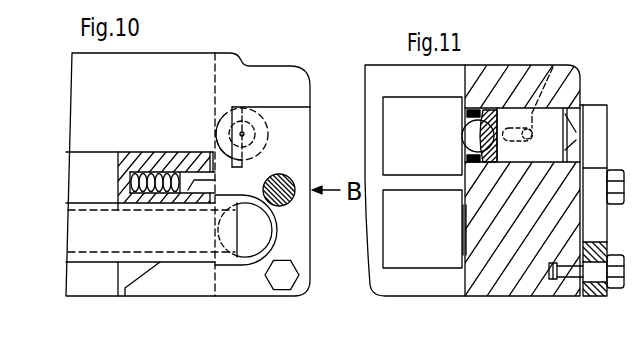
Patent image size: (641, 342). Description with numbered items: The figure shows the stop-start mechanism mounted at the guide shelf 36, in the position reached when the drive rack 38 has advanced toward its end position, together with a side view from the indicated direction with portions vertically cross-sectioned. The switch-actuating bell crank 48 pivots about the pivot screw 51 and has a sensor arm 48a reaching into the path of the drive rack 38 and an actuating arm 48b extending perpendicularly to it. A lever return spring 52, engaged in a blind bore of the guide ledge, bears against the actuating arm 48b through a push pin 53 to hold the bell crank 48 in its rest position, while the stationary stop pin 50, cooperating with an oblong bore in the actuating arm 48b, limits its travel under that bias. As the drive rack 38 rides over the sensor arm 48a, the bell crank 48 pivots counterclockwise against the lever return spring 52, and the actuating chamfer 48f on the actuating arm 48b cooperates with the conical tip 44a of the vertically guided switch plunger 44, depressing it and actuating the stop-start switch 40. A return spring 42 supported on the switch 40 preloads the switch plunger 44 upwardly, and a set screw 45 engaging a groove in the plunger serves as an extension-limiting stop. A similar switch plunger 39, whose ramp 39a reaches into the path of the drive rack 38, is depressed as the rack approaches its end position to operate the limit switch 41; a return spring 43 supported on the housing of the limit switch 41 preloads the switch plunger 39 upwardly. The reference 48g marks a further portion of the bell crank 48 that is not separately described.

In FIG. 11, the guide shelf 36 is at (527, 78).
In FIG. 10, the drive rack 38 is at (88, 247).
In FIG. 10, the switch plunger 39 is at (250, 230).
In FIG. 10, the ramp 39a is at (205, 245).
In FIG. 11, the stop-start switch 40 is at (392, 115).
In FIG. 11, the limit switch 41 is at (442, 256).
In FIG. 11, the return spring 42 is at (468, 112).
In FIG. 11, the return spring 43 is at (461, 247).
In FIG. 10, the switch plunger 44 is at (220, 125).
In FIG. 11, the switch plunger 44 is at (577, 79).
In FIG. 10, the conical tip 44a is at (220, 128).
In FIG. 11, the conical tip 44a is at (528, 135).
In FIG. 11, the set screw 45 is at (542, 123).
In FIG. 10, the switch-actuating bell crank 48 is at (312, 127).
In FIG. 11, the switch-actuating bell crank 48 is at (472, 180).
In FIG. 10, the sensor arm 48a is at (205, 292).
In FIG. 10, the actuating arm 48b is at (302, 167).
In FIG. 10, the actuating chamfer 48f is at (213, 153).
In FIG. 11, the actuating chamfer 48f is at (605, 113).
In FIG. 10, the holder recess 48g is at (183, 200).
In FIG. 11, the holder recess 48g is at (590, 183).
In FIG. 10, the stationary stop pin 50 is at (293, 178).
In FIG. 11, the stationary stop pin 50 is at (623, 192).
In FIG. 10, the pivot screw 51 is at (285, 277).
In FIG. 11, the pivot screw 51 is at (623, 275).
In FIG. 10, the lever return spring 52 is at (141, 175).
In FIG. 10, the push pin 53 is at (212, 196).